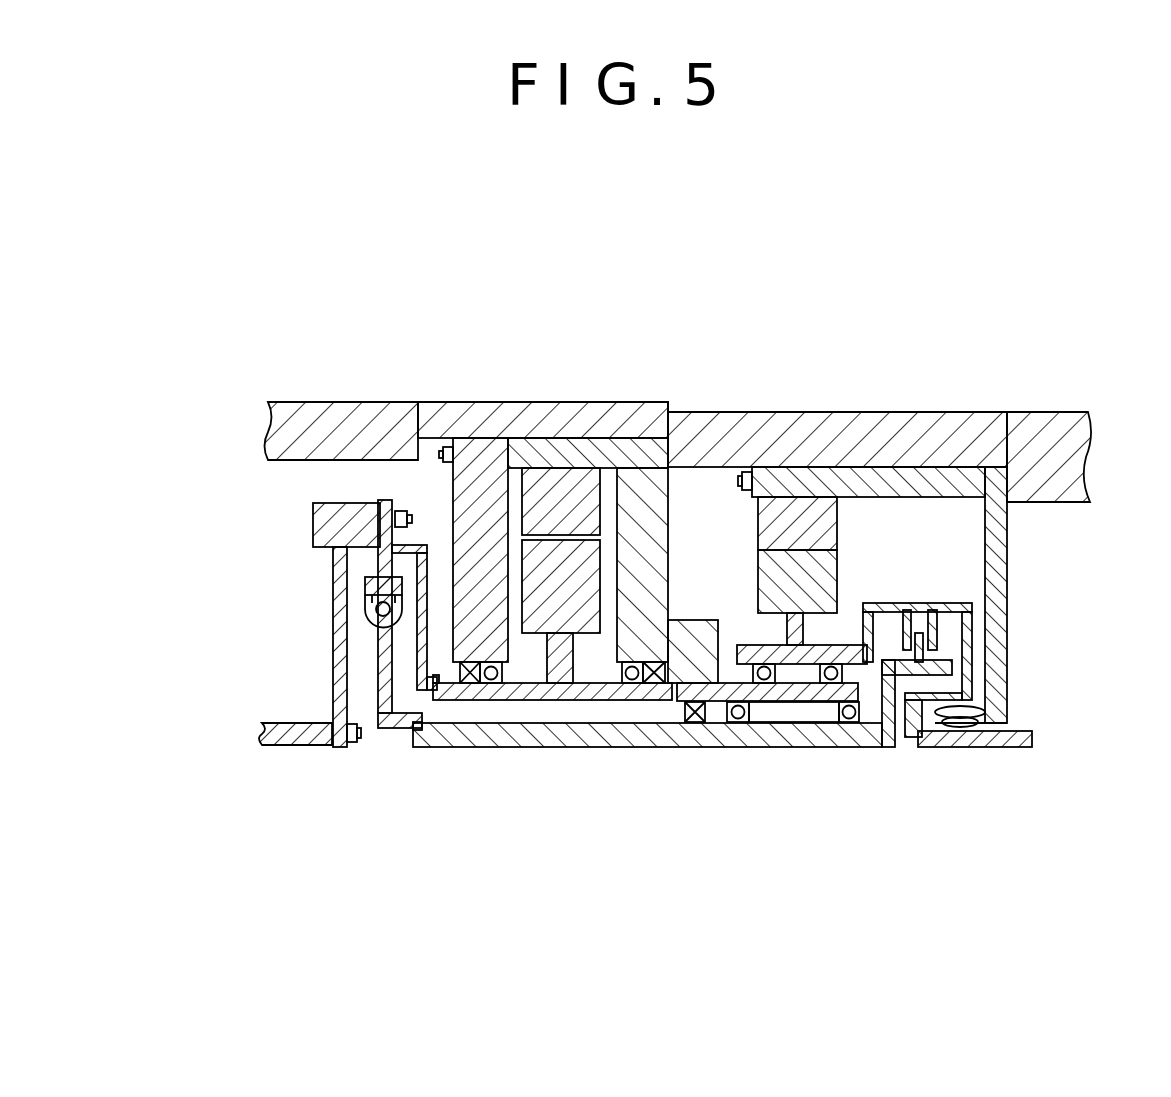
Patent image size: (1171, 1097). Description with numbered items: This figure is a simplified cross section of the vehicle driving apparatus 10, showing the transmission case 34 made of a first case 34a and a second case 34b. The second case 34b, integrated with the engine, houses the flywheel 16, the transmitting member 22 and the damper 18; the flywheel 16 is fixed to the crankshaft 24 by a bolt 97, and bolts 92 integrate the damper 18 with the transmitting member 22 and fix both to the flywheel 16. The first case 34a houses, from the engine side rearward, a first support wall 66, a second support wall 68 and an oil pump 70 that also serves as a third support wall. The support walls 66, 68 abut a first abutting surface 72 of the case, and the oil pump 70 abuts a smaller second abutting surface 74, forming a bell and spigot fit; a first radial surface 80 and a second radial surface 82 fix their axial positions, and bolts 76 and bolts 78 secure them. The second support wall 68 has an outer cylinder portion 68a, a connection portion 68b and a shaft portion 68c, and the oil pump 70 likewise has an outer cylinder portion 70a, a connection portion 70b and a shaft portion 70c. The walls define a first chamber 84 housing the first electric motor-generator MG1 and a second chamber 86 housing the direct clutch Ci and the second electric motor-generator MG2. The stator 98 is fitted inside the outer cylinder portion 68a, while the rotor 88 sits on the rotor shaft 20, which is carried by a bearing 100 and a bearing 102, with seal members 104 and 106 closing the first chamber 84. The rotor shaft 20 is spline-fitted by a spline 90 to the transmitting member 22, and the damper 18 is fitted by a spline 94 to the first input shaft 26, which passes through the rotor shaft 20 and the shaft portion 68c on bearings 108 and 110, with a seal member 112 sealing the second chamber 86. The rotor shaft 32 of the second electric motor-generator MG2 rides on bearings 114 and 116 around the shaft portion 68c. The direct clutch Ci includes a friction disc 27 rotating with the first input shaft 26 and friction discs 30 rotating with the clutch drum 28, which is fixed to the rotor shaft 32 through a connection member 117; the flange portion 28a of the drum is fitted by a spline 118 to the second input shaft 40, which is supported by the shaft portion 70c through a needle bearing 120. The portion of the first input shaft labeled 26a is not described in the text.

The driving apparatus 10 is at (505, 217).
The flywheel 16 is at (327, 523).
The damper 18 is at (362, 623).
The rotor shaft 20 is at (537, 735).
The transmitting member 22 is at (380, 425).
The crankshaft 24 is at (262, 726).
The first input shaft 26 is at (642, 750).
The intermediate shaft portion 26a is at (800, 740).
The friction disc 27 is at (940, 665).
The clutch drum 28 is at (922, 597).
The flange portion 28a is at (945, 715).
The friction discs 30 is at (920, 646).
The rotor shaft 32 is at (817, 657).
The transmission case 34 is at (362, 313).
The first case 34a is at (448, 425).
The second case 34b is at (367, 423).
The second input shaft 40 is at (1032, 748).
The first support wall 66 is at (510, 455).
The second support wall 68 is at (676, 555).
The outer cylinder portion 68a is at (625, 440).
The connection portion 68b is at (677, 498).
The shaft portion 68c is at (805, 703).
The oil pump 70 is at (1018, 525).
The outer cylinder portion 70a is at (959, 440).
The connection portion 70b is at (1005, 555).
The shaft portion 70c is at (990, 748).
The first abutting surface 72 is at (610, 450).
The second abutting surface 74 is at (826, 482).
The bolts 76 is at (456, 445).
The bolts 78 is at (747, 472).
The first radial surface 80 is at (663, 450).
The second radial surface 82 is at (988, 482).
The first chamber 84 is at (508, 671).
The second chamber 86 is at (892, 582).
The rotor 88 is at (592, 625).
The spline 90 is at (420, 698).
The bolts 92 is at (400, 500).
The spline 94 is at (405, 743).
The bolt 97 is at (351, 748).
The stator 98 is at (538, 475).
The bearing 100 is at (491, 684).
The bearing 102 is at (613, 690).
The seal member 104 is at (470, 684).
The seal member 106 is at (695, 640).
The bearing 108 is at (744, 725).
The bearing 110 is at (886, 747).
The seal member 112 is at (695, 725).
The bearing 114 is at (738, 725).
The bearing 116 is at (849, 725).
The connection member 117 is at (900, 750).
The spline 118 is at (920, 740).
The needle bearing 120 is at (953, 732).
The first electric motor-generator MG1 is at (552, 750).
The second electric motor-generator MG2 is at (856, 542).
The direct clutch Ci is at (905, 578).